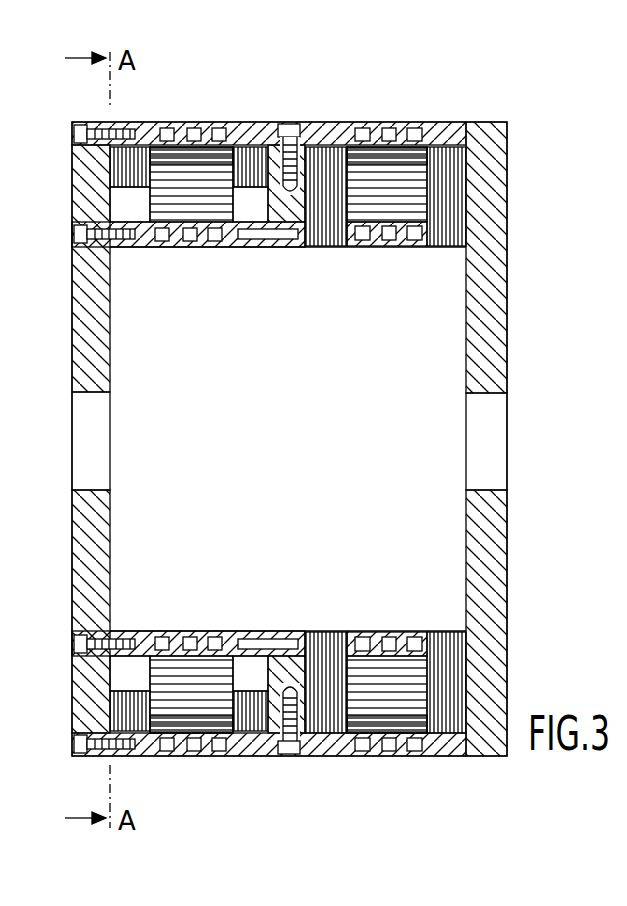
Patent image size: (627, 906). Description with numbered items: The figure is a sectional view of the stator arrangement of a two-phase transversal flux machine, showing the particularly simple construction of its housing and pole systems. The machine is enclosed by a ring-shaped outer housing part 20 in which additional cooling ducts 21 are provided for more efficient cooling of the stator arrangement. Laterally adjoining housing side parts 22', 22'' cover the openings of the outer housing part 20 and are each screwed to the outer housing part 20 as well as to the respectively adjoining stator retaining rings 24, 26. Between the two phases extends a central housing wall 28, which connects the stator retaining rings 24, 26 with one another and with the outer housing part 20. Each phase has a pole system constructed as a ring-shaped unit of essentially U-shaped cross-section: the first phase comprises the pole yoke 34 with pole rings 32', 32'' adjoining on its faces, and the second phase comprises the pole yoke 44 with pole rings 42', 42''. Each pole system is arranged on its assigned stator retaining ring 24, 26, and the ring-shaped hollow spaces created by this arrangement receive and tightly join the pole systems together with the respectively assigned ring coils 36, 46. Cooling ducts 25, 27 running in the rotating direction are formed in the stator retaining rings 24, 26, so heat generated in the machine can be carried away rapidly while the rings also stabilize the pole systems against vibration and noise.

The outer housing part 20 is at (435, 740).
The cooling ducts 21 is at (362, 137).
The housing side part 22' is at (523, 439).
The housing side part 22'' is at (62, 439).
The stator retaining ring 24 is at (198, 643).
The cooling ducts 25 is at (165, 237).
The stator retaining ring 26 is at (395, 648).
The cooling ducts 27 is at (415, 233).
The central housing wall 28 is at (285, 655).
The pole ring 32' is at (82, 183).
The pole ring 32'' is at (252, 148).
The pole yoke 34 is at (180, 158).
The ring coil 36 is at (180, 685).
The pole ring 42' is at (368, 160).
The pole ring 42'' is at (504, 196).
The pole yoke 44 is at (417, 158).
The ring coil 46 is at (380, 685).